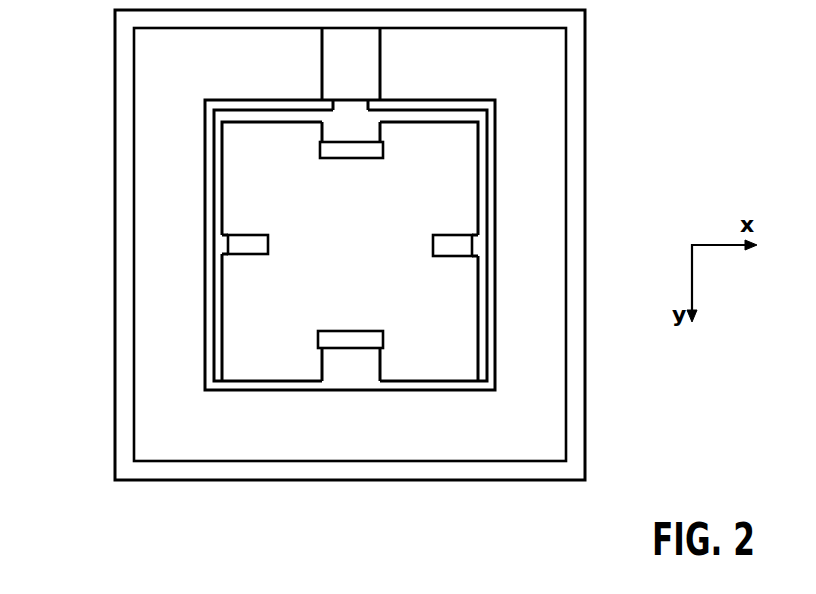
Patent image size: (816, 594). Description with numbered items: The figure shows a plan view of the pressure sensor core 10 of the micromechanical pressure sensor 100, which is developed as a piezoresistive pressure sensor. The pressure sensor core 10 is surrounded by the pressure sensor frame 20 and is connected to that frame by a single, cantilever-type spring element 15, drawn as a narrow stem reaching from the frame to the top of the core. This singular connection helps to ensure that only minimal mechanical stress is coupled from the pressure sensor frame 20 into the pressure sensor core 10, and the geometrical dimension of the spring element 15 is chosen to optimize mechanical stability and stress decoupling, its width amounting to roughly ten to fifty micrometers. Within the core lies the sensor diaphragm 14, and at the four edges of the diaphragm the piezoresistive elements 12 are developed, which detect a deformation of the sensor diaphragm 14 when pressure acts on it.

The micromechanical pressure sensor 100 is at (125, 484).
The pressure sensor frame 20 is at (587, 100).
The spring element 15 is at (381, 63).
The pressure sensor core 10 is at (205, 203).
The sensor diaphragm 14 is at (365, 258).
The piezoresistive elements 12 is at (318, 150).